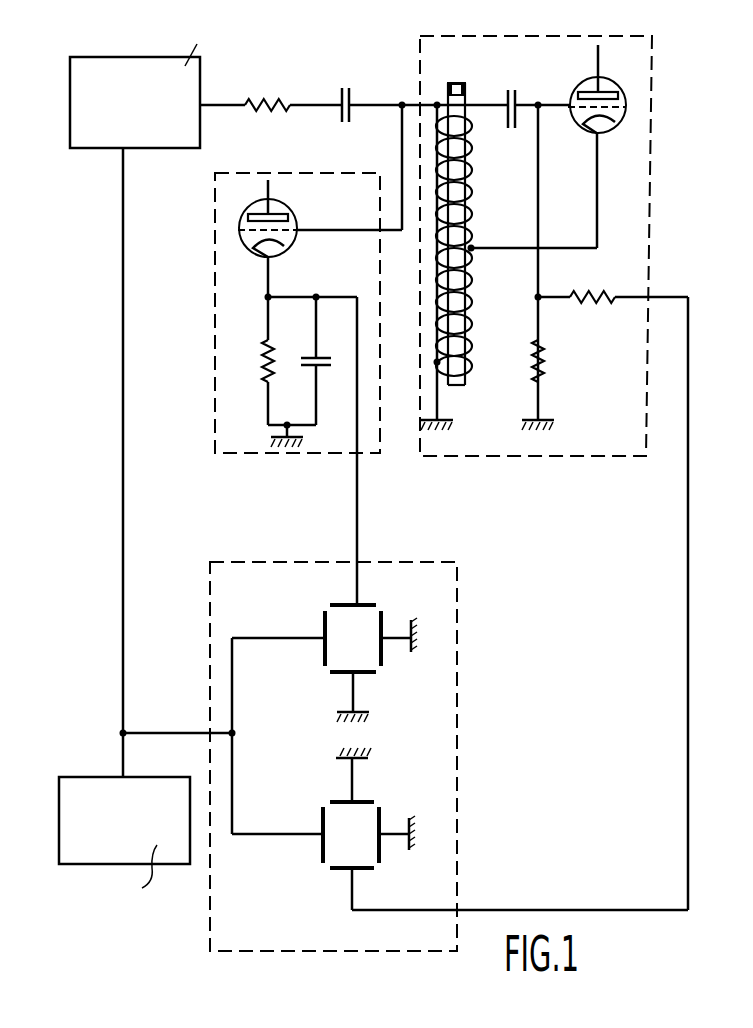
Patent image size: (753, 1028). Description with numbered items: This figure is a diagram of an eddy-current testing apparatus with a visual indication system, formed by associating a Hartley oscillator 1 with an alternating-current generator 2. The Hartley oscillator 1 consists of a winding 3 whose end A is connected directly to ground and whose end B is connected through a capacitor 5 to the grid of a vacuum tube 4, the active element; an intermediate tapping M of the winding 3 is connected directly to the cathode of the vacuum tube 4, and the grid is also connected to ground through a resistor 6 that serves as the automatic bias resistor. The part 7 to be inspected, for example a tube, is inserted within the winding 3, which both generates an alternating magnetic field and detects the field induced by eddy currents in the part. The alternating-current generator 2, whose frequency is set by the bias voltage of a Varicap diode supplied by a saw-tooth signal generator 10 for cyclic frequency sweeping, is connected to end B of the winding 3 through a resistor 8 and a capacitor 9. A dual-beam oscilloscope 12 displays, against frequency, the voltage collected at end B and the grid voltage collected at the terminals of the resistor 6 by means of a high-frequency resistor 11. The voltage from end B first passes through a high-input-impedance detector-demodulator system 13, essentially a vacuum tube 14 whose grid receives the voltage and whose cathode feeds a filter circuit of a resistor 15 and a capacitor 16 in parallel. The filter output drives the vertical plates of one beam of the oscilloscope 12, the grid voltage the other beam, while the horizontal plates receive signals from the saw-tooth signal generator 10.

The Hartley oscillator 1 is at (420, 62).
The alternating-current generator 2 is at (139, 116).
The winding 3 is at (474, 200).
The vacuum tube 4 is at (569, 88).
The capacitor 5 is at (507, 96).
The resistor 6 is at (541, 370).
The part to be inspected 7 is at (457, 371).
The resistor 8 is at (287, 99).
The capacitor 9 is at (340, 94).
The saw-tooth signal generator 10 is at (130, 836).
The resistor 11 is at (584, 292).
The dual-beam oscilloscope 12 is at (457, 697).
The detector-demodulator system 13 is at (212, 372).
The vacuum tube 14 is at (282, 256).
The resistor 15 is at (262, 375).
The capacitor 16 is at (335, 351).